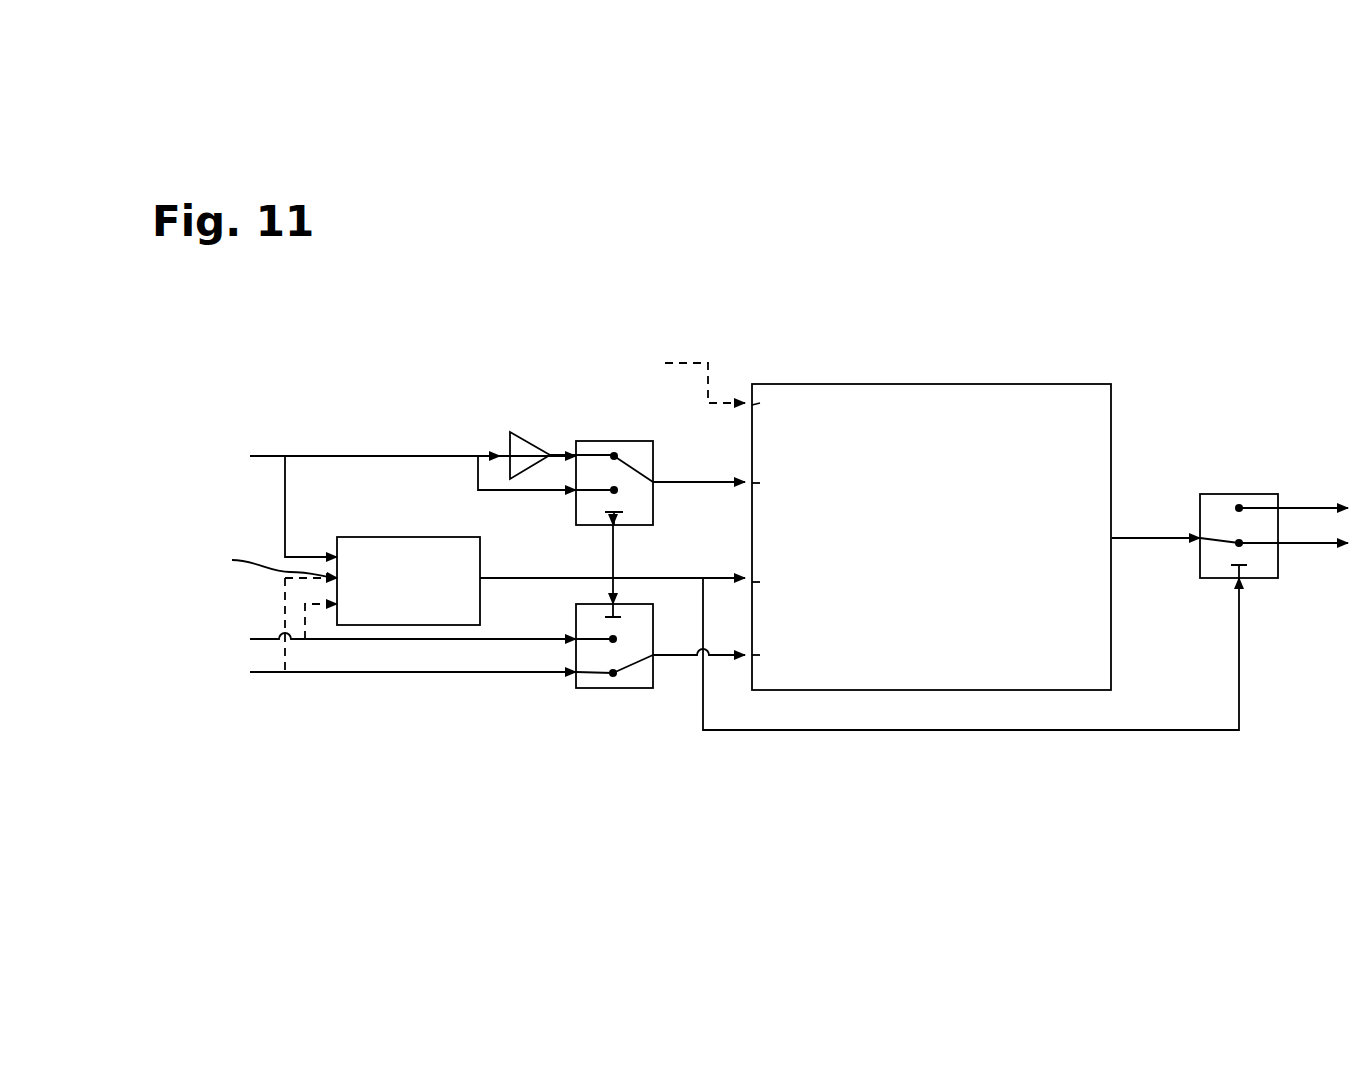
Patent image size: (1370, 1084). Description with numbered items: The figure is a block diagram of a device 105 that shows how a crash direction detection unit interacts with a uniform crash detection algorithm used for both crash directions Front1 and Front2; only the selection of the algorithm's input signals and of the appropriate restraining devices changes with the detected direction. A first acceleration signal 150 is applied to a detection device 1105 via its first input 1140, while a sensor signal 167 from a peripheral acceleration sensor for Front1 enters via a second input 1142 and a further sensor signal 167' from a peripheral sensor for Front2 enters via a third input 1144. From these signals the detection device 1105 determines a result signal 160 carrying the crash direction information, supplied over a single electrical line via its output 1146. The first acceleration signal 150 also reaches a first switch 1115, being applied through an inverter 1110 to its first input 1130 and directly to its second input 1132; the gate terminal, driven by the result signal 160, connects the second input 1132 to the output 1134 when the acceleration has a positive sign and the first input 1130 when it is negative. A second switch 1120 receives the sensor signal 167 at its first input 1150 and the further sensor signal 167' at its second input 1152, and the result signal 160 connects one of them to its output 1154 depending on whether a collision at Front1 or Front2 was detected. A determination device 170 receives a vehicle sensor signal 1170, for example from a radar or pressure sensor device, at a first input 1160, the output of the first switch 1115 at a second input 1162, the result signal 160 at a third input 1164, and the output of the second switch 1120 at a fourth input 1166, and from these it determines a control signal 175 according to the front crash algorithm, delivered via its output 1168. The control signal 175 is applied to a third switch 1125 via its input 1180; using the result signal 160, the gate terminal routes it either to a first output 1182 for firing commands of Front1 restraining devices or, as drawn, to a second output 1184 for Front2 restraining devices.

The device 105 is at (366, 335).
The first acceleration signal 150 is at (258, 455).
The first input 1140 is at (336, 556).
The inverter 1110 is at (522, 432).
The first switch 1115 is at (603, 441).
The first input 1130 is at (588, 456).
The second input 1132 is at (562, 493).
The output 1134 is at (654, 482).
The detection device 1105 is at (400, 626).
The second input 1142 is at (253, 610).
The third input 1144 is at (335, 606).
The output 1146 is at (482, 580).
The sensor signal 167 is at (364, 628).
The further sensor signal 167' is at (363, 661).
The second switch 1120 is at (640, 688).
The first input 1150 is at (574, 641).
The second input 1152 is at (572, 676).
The output 1154 is at (658, 658).
The result signal 160 is at (683, 578).
The determination device 170 is at (1034, 384).
The vehicle sensor signal 1170 is at (727, 403).
The first input 1160 is at (752, 405).
The second input 1162 is at (752, 483).
The third input 1164 is at (752, 582).
The fourth input 1166 is at (752, 655).
The control signal 175 is at (1157, 538).
The output 1168 is at (1114, 540).
The third switch 1125 is at (1262, 580).
The input 1180 is at (1205, 535).
The first output 1182 is at (1308, 507).
The second output 1184 is at (1297, 545).